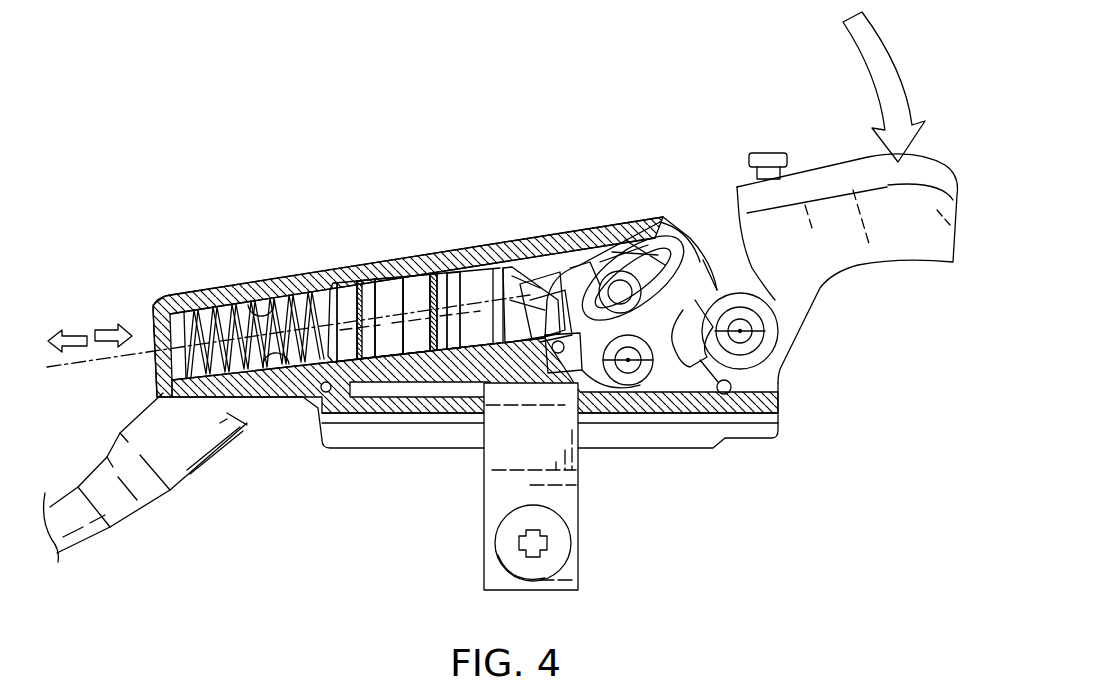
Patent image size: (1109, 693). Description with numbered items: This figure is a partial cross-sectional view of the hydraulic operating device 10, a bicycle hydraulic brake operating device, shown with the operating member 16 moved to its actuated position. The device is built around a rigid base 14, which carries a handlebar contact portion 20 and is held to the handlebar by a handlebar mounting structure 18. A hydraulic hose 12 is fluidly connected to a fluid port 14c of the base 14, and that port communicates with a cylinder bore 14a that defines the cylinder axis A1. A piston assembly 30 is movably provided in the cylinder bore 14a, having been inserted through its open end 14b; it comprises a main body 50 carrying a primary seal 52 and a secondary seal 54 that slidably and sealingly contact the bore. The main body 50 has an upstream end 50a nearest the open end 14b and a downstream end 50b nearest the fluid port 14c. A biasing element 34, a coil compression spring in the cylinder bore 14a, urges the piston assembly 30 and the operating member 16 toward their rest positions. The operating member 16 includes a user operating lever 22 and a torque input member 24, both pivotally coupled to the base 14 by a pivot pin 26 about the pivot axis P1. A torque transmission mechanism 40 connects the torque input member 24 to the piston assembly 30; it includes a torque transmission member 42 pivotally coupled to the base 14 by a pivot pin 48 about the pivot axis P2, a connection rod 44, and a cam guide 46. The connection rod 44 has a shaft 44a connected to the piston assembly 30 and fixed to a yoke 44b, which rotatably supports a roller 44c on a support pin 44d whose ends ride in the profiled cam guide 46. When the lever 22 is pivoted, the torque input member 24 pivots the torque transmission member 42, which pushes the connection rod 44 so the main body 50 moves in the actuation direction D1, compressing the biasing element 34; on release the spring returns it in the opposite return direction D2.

The hydraulic operating device 10 is at (265, 190).
The hydraulic hose 12 is at (85, 540).
The base 14 is at (190, 286).
The cylinder bore 14a is at (276, 302).
The open end 14b is at (667, 220).
The fluid port 14c is at (277, 374).
The operating member 16 is at (817, 160).
The handlebar mounting structure 18 is at (598, 512).
The handlebar contact portion 20 is at (660, 433).
The user operating lever 22 is at (897, 227).
The torque input member 24 is at (725, 393).
The pivot pin 26 is at (775, 350).
The piston assembly 30 is at (385, 274).
The biasing element 34 is at (224, 312).
The torque transmission mechanism 40 is at (541, 272).
The torque transmission member 42 is at (670, 362).
The connection rod 44 is at (503, 276).
The shaft 44a is at (533, 300).
The yoke 44b is at (570, 272).
The roller 44c is at (683, 238).
The support pin 44d is at (625, 280).
The cam guide 46 is at (610, 257).
The pivot pin 48 is at (645, 385).
The main body 50 is at (400, 360).
The upstream end 50a is at (410, 283).
The downstream end 50b is at (355, 285).
The primary seal 52 is at (336, 287).
The secondary seal 54 is at (452, 275).
The cylinder axis A1 is at (68, 366).
The actuation direction D1 is at (70, 330).
The return direction D2 is at (100, 326).
The pivot axis P1 is at (742, 332).
The pivot axis P2 is at (628, 362).